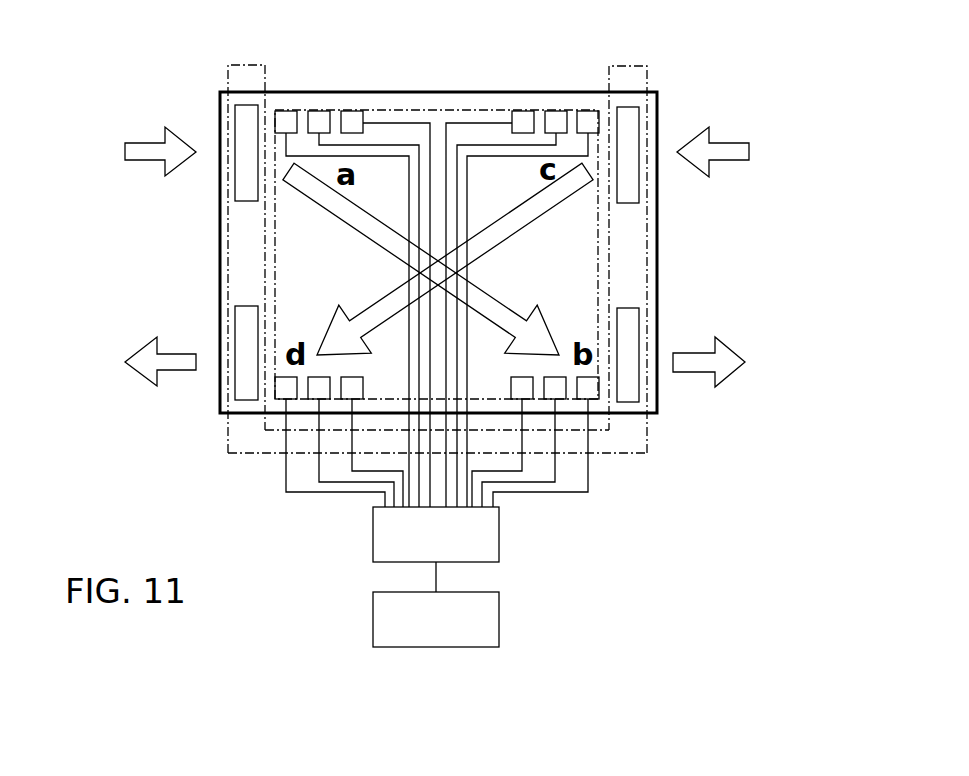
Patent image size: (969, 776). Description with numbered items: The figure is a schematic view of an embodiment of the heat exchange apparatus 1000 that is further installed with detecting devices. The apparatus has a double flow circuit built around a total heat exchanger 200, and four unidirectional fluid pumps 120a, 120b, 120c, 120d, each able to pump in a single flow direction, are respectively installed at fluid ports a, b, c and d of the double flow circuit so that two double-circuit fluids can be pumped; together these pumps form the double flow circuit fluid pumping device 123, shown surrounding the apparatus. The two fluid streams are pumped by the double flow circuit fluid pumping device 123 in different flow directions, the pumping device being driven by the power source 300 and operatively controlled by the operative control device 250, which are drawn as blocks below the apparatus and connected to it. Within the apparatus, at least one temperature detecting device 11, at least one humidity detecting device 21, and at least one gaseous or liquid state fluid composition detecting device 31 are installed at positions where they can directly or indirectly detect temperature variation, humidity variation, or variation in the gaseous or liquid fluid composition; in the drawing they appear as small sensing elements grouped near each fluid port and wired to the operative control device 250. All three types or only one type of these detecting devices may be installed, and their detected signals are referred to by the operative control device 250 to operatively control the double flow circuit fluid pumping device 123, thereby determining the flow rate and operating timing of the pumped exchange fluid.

The heat exchange apparatus 1000 is at (473, 92).
The double flow circuit fluid pumping device 123 is at (250, 62).
The total heat exchanger 200 is at (392, 110).
The unidirectional fluid pump 120a is at (233, 125).
The unidirectional fluid pump 120b is at (640, 320).
The unidirectional fluid pump 120c is at (642, 117).
The unidirectional fluid pump 120d is at (233, 327).
The temperature detecting device 11 is at (291, 121).
The humidity detecting device 21 is at (319, 121).
The gaseous or liquid state fluid composition detecting device 31 is at (356, 121).
The operative control device 250 is at (487, 563).
The power source 300 is at (373, 635).